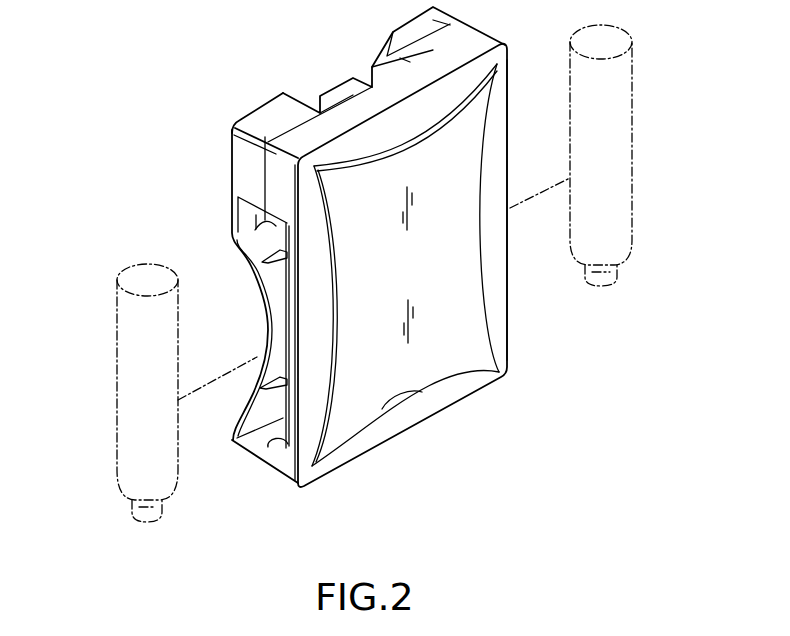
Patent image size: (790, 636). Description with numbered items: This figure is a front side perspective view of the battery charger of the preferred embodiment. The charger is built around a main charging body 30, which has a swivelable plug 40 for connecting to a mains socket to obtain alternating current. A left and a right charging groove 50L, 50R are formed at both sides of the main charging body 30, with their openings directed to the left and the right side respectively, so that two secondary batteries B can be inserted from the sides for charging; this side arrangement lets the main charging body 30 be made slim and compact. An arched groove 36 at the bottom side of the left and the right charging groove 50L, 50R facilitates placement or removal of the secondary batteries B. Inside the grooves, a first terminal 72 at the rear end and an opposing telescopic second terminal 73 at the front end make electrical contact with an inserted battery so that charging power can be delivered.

The main charging body 30 is at (545, 333).
The plug 40 is at (308, 80).
The arched groove 36 is at (260, 372).
The left charging groove 50L is at (280, 292).
The right charging groove 50R is at (521, 162).
The second terminal 73 is at (264, 228).
The first terminal 72 is at (282, 442).
The secondary battery B is at (140, 371).